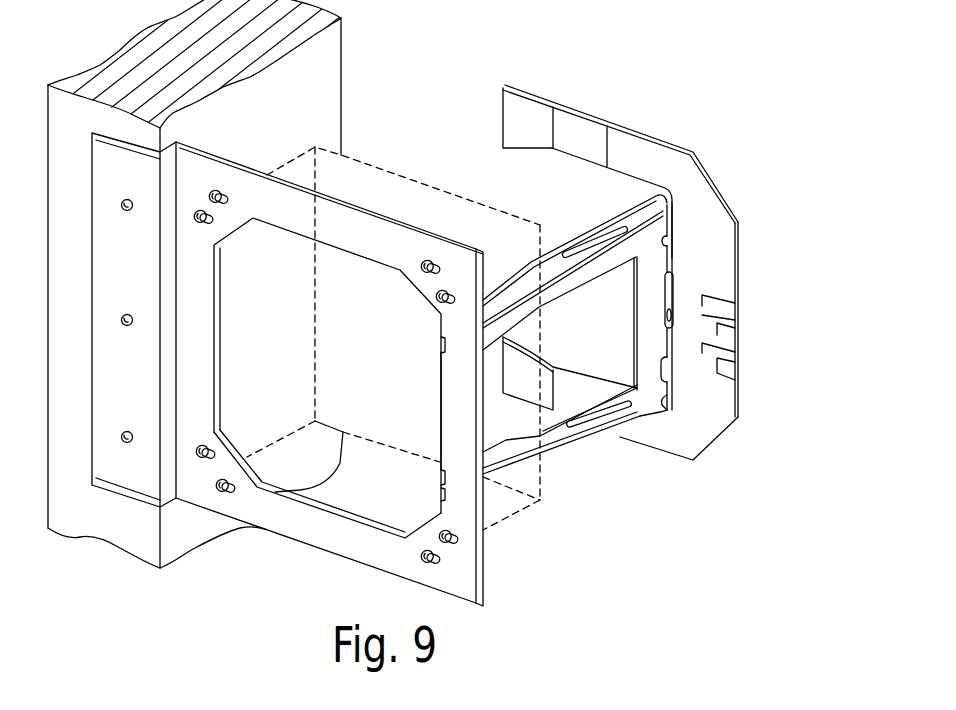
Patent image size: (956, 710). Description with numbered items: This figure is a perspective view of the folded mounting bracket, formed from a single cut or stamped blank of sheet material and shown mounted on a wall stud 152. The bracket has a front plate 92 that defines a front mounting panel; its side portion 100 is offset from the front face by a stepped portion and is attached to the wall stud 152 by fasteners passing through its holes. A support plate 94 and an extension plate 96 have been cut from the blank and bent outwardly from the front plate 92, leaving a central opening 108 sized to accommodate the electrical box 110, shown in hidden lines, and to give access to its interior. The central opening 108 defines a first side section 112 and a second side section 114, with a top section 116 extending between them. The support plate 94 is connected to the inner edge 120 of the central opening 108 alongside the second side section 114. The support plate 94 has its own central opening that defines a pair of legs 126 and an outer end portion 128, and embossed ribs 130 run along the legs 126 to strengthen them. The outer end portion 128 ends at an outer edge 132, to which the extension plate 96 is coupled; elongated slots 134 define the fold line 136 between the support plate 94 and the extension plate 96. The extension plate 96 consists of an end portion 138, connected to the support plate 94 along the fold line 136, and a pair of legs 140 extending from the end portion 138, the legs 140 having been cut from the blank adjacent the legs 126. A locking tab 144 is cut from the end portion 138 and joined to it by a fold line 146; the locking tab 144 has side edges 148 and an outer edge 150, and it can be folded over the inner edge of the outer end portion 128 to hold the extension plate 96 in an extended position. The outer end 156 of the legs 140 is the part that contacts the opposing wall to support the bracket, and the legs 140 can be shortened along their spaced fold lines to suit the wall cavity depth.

The front plate 92 is at (287, 378).
The support plate 94 is at (619, 383).
The extension plate 96 is at (620, 150).
The side portion 100 is at (132, 377).
The central opening 108 is at (300, 468).
The electrical box 110 is at (393, 300).
The first side section 112 is at (200, 293).
The second side section 114 is at (460, 446).
The top section 116 is at (216, 186).
The inner edge 120 is at (455, 403).
The legs 126 is at (568, 250).
The outer end portion 128 is at (656, 372).
The embossed ribs 130 is at (583, 440).
The outer edge 132 is at (672, 217).
The elongated slots 134 is at (673, 328).
The fold line 136 is at (668, 262).
The end portion 138 is at (711, 323).
The legs 140 is at (578, 125).
The locking tab 144 is at (717, 323).
The fold line 146 is at (737, 307).
The side edges 148 is at (737, 380).
The outer edge 150 is at (737, 343).
The wall stud 152 is at (352, 46).
The outer end 156 is at (500, 362).